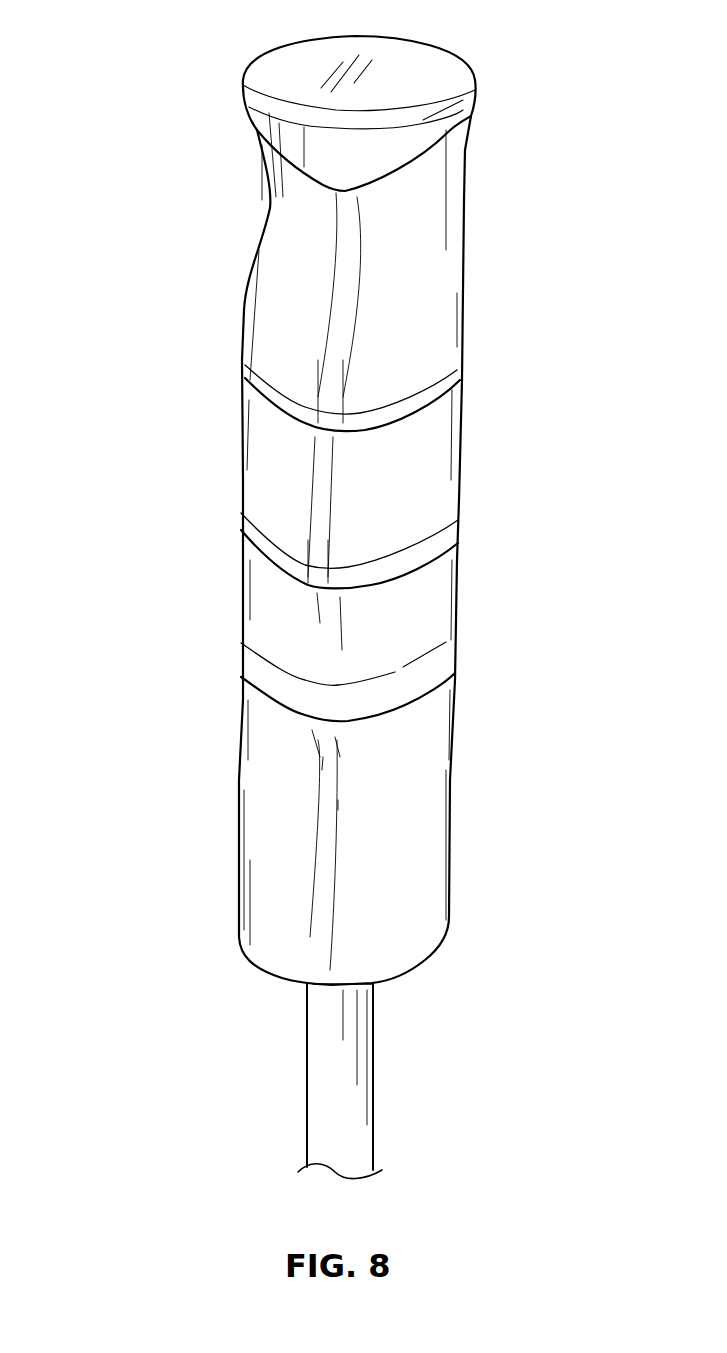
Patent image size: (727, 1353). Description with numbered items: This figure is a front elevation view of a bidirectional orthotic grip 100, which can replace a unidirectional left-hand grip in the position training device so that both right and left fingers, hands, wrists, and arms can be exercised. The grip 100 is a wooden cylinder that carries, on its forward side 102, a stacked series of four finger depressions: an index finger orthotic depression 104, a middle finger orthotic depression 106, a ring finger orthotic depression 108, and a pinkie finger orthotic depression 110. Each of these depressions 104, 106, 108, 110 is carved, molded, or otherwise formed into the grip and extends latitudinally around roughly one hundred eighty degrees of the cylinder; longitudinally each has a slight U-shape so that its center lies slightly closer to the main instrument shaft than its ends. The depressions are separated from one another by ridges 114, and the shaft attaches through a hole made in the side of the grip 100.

The bidirectional orthotic grip 100 is at (156, 33).
The forward side 102 is at (359, 937).
The index finger orthotic depression 104 is at (376, 290).
The middle finger orthotic depression 106 is at (348, 467).
The ring finger orthotic depression 108 is at (368, 643).
The pinkie finger orthotic depression 110 is at (365, 785).
The ridges 114 is at (386, 411).